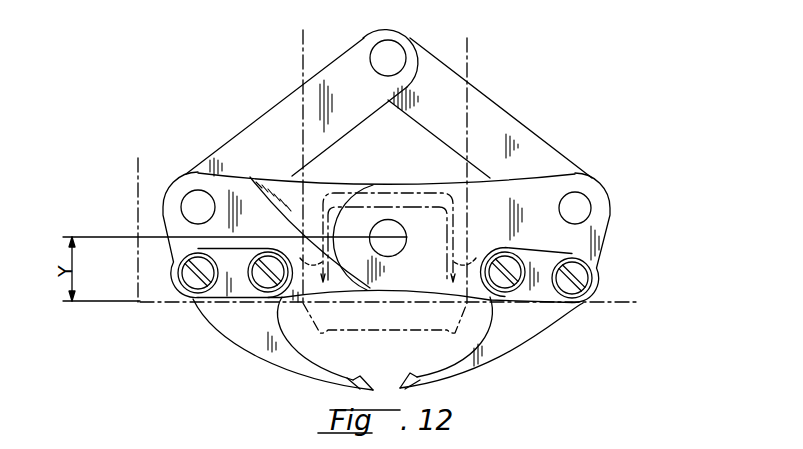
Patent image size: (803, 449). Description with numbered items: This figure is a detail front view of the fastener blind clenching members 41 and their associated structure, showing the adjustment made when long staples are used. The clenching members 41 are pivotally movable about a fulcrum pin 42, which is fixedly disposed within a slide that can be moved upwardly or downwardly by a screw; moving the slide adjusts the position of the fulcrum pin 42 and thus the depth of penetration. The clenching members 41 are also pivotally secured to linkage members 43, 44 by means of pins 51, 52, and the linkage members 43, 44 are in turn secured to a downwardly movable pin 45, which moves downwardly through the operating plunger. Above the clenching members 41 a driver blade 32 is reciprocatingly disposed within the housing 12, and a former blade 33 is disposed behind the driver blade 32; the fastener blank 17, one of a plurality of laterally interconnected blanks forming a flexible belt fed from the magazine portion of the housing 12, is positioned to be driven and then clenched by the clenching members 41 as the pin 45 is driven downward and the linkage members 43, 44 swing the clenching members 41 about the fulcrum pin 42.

The housing 12 is at (637, 157).
The fastener blank 17 is at (450, 256).
The driver blade 32 is at (357, 330).
The former blade 33 is at (450, 203).
The fastener blind clenching members 41 is at (255, 338).
The fulcrum pin 42 is at (393, 246).
The linkage member 43 is at (490, 117).
The linkage member 44 is at (273, 117).
The downwardly movable pin 45 is at (391, 57).
The pin 51 is at (577, 207).
The pin 52 is at (187, 200).